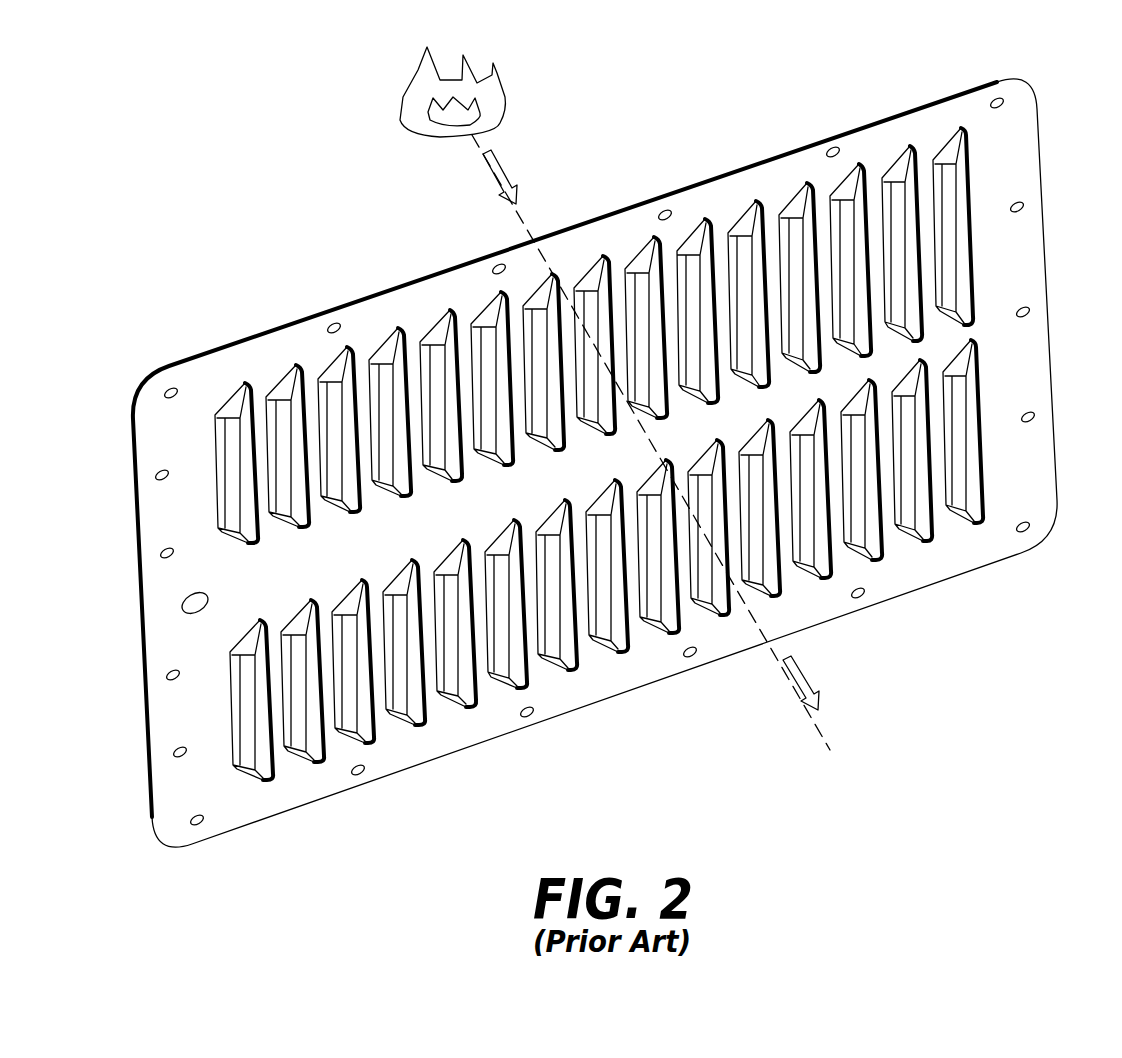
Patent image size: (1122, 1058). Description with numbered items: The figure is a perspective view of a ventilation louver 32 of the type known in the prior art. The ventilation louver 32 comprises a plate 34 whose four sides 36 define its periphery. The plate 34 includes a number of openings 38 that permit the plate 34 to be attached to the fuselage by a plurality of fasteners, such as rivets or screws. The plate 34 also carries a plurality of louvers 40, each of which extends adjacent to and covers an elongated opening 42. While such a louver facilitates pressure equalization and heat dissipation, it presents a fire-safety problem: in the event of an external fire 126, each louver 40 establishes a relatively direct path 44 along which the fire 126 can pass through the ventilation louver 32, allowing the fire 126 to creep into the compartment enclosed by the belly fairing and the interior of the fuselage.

The ventilation louver 32 is at (586, 479).
The plate 34 is at (912, 570).
The sides 36 is at (713, 173).
The openings 38 is at (333, 323).
The louvers 40 is at (573, 283).
The elongated openings 42 is at (598, 262).
The relatively direct path 44 is at (520, 218).
The external fire 126 is at (505, 93).